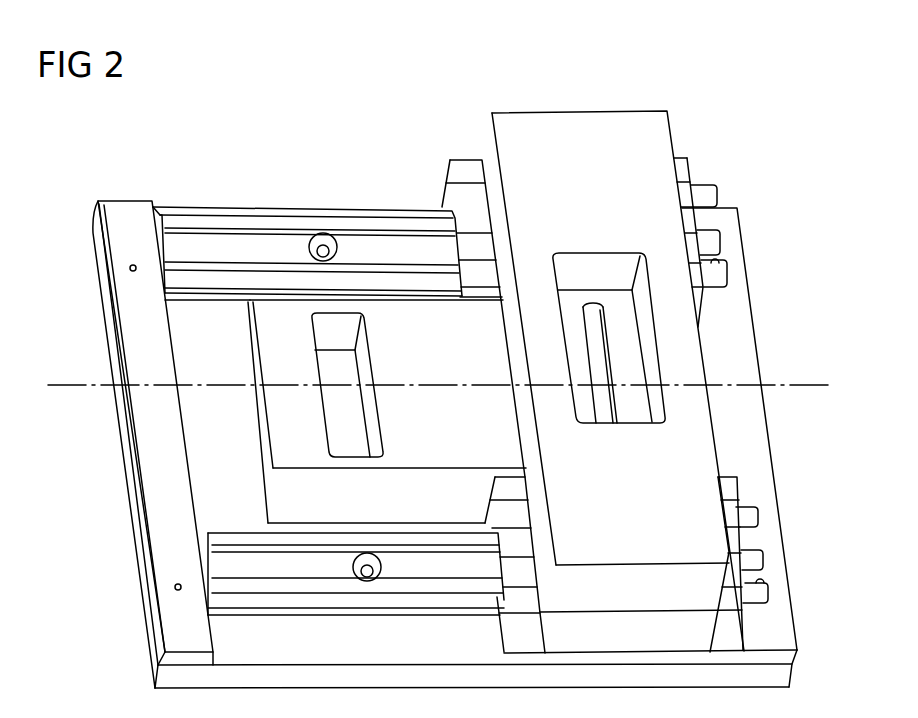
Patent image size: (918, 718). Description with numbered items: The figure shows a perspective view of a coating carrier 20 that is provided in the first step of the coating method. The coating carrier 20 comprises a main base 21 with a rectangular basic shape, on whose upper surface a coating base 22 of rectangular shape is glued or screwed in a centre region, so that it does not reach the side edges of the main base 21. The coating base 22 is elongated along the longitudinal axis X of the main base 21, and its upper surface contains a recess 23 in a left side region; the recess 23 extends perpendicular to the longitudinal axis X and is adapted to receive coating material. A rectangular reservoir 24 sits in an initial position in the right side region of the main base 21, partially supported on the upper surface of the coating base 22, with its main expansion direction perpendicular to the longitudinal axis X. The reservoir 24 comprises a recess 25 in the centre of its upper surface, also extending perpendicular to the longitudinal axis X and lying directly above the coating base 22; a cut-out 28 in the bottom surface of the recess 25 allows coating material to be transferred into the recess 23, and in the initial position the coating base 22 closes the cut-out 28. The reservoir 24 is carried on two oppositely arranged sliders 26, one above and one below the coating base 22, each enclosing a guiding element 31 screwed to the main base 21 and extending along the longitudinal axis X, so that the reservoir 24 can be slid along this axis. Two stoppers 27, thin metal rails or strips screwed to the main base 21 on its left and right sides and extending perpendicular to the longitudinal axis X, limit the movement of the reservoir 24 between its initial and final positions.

The coating carrier 20 is at (140, 612).
The main base 21 is at (185, 350).
The coating base 22 is at (270, 375).
The recess 23 is at (337, 370).
The reservoir 24 is at (660, 140).
The recess 25 is at (573, 328).
The sliders 26 is at (688, 170).
The stoppers 27 is at (118, 212).
The cut-out 28 is at (595, 348).
The guiding elements 31 is at (205, 218).
The longitudinal axis X is at (773, 380).